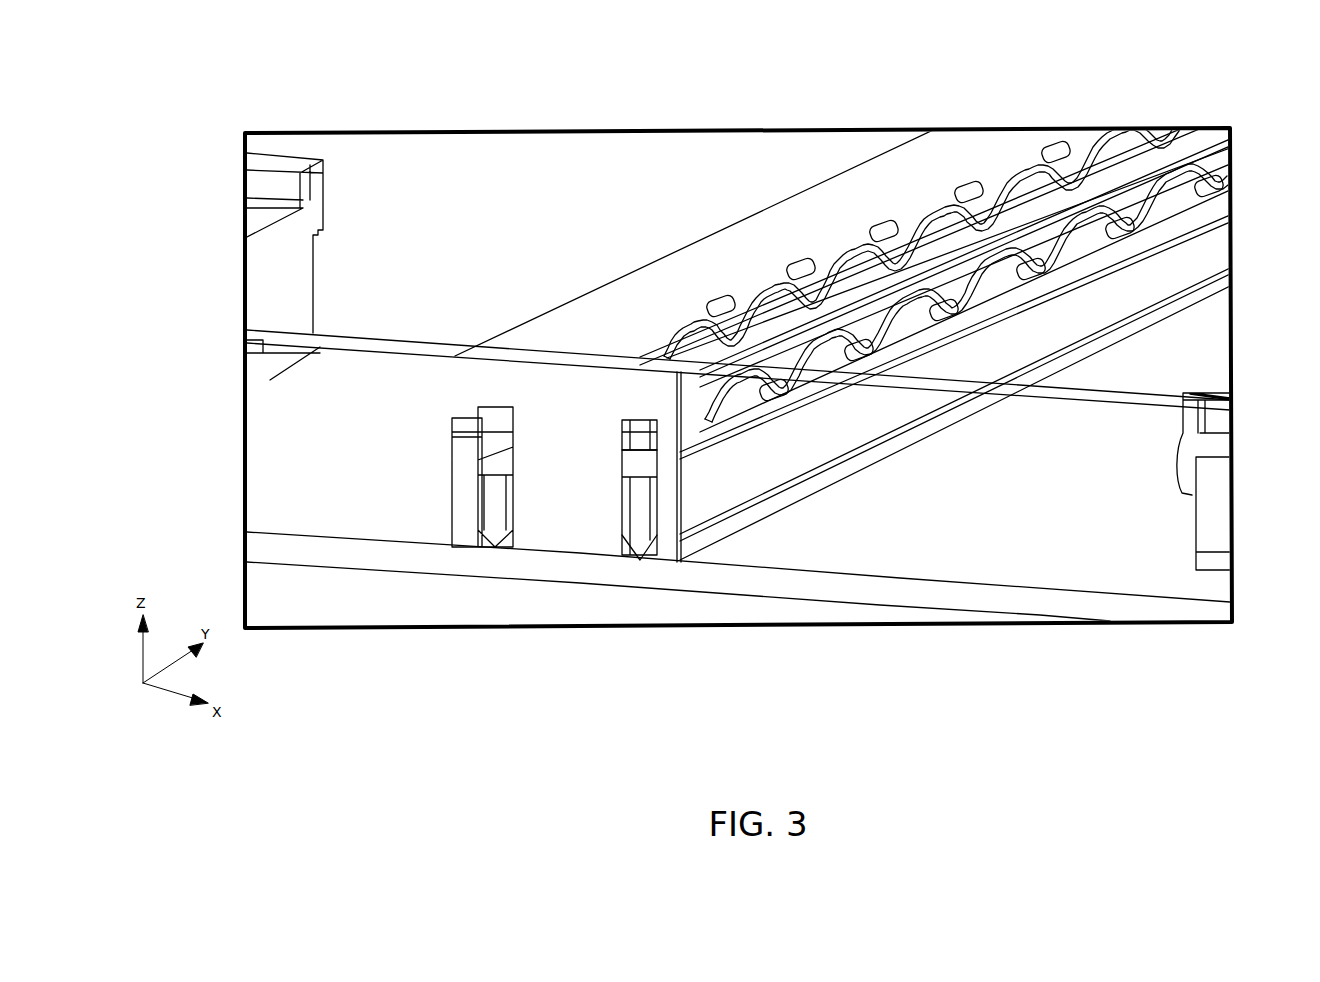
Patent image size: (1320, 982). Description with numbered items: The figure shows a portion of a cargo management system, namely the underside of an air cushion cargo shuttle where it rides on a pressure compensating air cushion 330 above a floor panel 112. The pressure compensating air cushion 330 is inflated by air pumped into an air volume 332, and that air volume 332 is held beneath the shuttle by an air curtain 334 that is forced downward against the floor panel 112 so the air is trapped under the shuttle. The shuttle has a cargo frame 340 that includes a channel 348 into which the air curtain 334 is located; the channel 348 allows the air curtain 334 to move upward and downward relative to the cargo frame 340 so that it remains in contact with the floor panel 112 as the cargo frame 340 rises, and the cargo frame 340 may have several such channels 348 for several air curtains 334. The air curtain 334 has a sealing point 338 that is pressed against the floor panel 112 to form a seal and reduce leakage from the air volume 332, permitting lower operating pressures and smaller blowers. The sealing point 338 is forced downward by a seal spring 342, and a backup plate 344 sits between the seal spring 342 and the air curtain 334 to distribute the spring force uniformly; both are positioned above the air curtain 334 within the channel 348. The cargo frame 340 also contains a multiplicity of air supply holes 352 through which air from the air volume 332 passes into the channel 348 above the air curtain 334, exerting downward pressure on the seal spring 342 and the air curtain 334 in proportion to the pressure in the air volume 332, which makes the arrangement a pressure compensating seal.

The floor panel 112 is at (1165, 397).
The pressure compensating air cushion 330 is at (1075, 570).
The air volume 332 is at (1040, 483).
The air curtain 334 is at (620, 533).
The sealing point 338 is at (640, 575).
The cargo frame 340 is at (863, 187).
The seal spring 342 is at (1008, 143).
The backup plate 344 is at (1150, 150).
The channel 348 is at (623, 420).
The air supply holes 352 is at (730, 430).